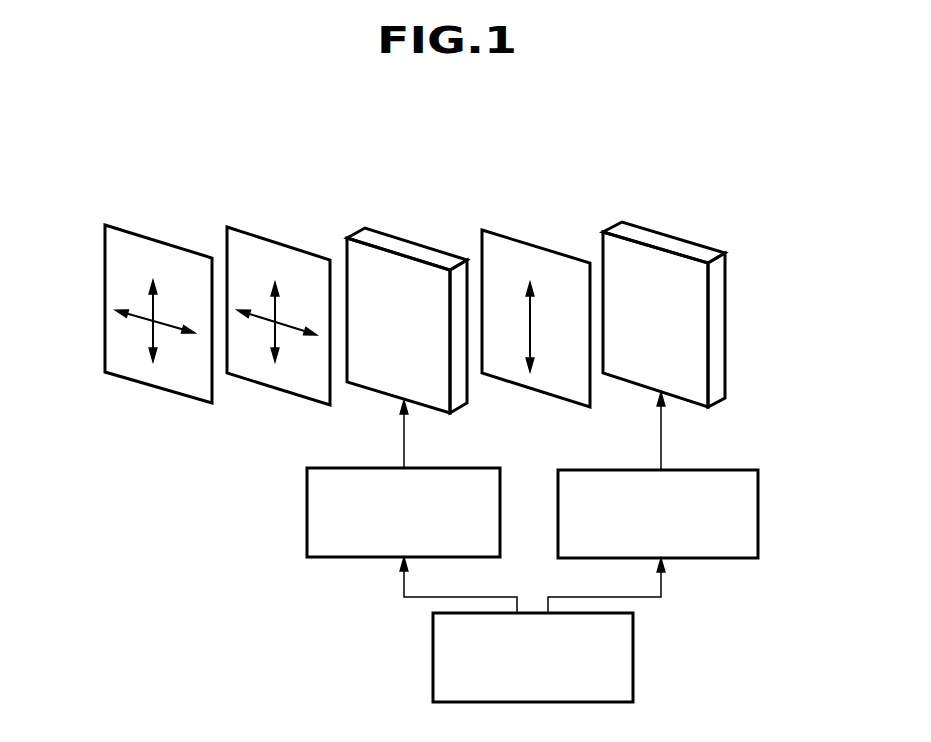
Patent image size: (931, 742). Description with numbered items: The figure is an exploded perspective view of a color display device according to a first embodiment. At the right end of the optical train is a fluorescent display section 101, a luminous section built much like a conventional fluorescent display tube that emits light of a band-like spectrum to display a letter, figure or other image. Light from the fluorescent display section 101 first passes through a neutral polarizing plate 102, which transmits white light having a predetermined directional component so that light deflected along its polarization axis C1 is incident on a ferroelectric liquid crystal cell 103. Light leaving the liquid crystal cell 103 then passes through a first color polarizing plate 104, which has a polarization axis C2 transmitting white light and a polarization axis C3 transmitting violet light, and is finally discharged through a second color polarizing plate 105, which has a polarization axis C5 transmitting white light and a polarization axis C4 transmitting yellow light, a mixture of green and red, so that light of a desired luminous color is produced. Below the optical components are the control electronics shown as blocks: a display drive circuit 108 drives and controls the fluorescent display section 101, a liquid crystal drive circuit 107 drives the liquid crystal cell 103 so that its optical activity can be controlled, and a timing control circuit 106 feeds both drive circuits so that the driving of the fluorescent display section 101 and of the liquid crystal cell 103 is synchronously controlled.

The fluorescent display section 101 is at (667, 240).
The neutral polarizing plate 102 is at (541, 243).
The ferroelectric liquid crystal cell 103 is at (404, 240).
The first color polarizing plate 104 is at (274, 240).
The second color polarizing plate 105 is at (164, 240).
The timing control circuit 106 is at (432, 665).
The liquid crystal drive circuit 107 is at (306, 527).
The display drive circuit 108 is at (759, 527).
The polarization axis C1 is at (524, 360).
The polarization axis C2 is at (270, 355).
The polarization axis C3 is at (312, 338).
The polarization axis C4 is at (150, 290).
The polarization axis C5 is at (126, 322).